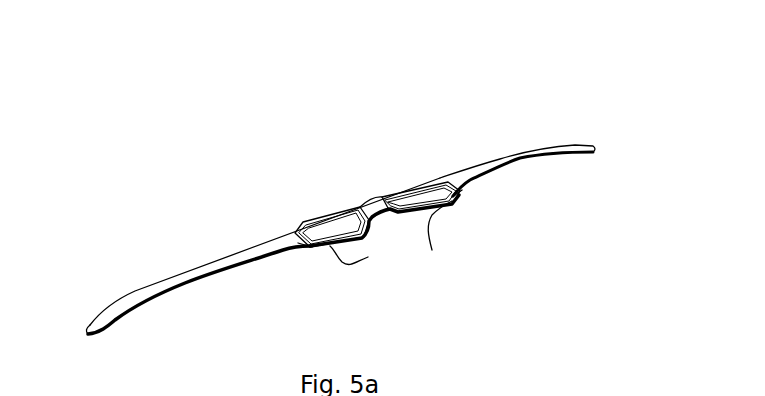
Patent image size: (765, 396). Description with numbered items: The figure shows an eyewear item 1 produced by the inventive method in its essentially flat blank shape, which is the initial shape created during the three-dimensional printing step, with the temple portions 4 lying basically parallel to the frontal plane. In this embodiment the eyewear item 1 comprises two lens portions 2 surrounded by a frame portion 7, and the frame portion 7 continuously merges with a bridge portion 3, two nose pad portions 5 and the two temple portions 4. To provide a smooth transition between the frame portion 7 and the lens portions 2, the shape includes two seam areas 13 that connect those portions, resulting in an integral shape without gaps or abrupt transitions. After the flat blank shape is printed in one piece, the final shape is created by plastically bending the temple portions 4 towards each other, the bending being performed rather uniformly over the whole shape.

The eyewear item 1 is at (351, 205).
The lens portions 2 is at (418, 197).
The bridge portion 3 is at (368, 205).
The temple portions 4 is at (204, 266).
The nose pad portions 5 is at (389, 210).
The frame portion 7 is at (432, 250).
The seam areas 13 is at (311, 247).